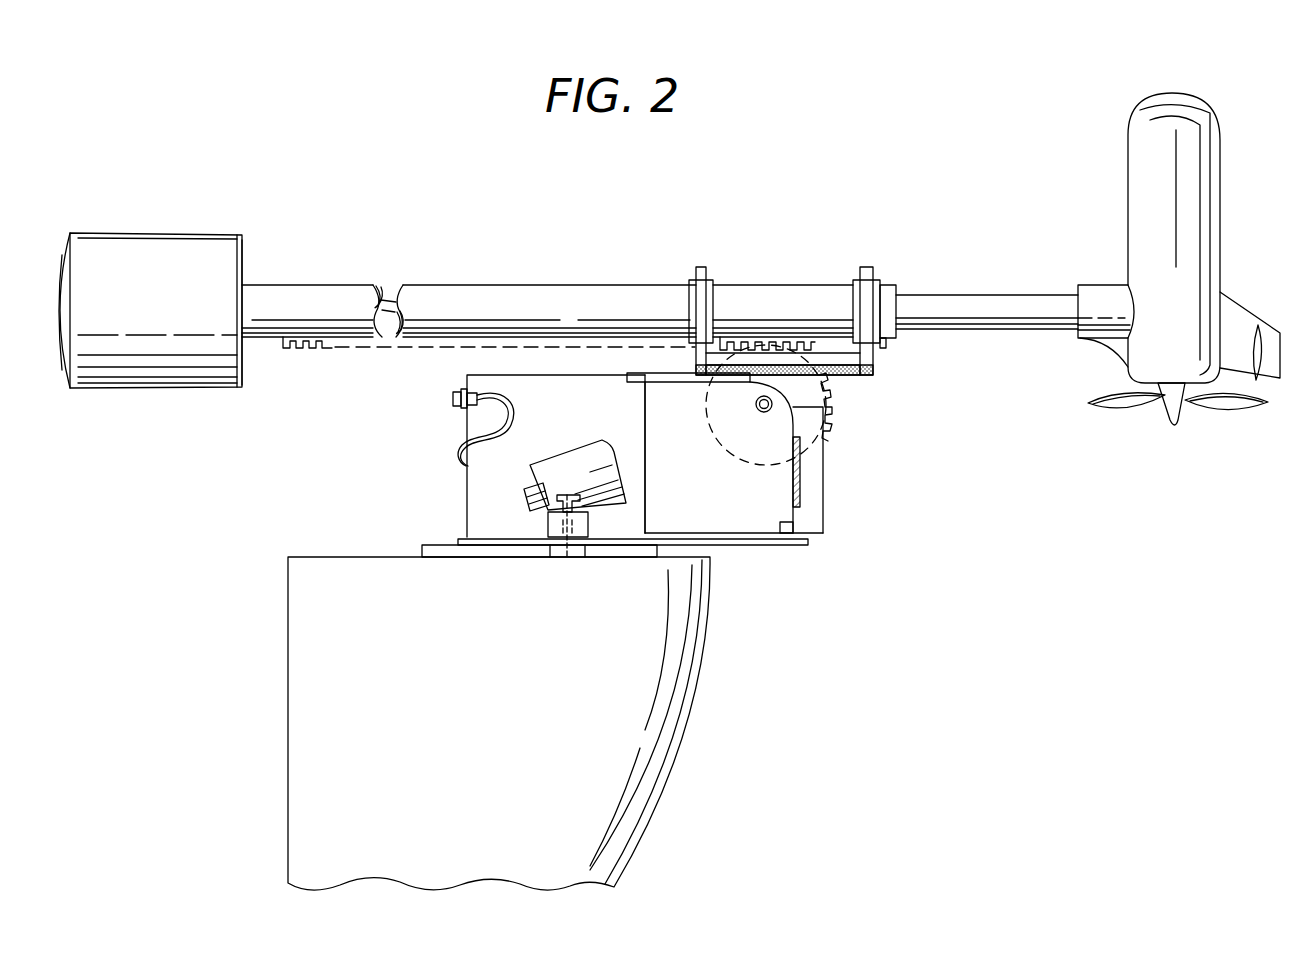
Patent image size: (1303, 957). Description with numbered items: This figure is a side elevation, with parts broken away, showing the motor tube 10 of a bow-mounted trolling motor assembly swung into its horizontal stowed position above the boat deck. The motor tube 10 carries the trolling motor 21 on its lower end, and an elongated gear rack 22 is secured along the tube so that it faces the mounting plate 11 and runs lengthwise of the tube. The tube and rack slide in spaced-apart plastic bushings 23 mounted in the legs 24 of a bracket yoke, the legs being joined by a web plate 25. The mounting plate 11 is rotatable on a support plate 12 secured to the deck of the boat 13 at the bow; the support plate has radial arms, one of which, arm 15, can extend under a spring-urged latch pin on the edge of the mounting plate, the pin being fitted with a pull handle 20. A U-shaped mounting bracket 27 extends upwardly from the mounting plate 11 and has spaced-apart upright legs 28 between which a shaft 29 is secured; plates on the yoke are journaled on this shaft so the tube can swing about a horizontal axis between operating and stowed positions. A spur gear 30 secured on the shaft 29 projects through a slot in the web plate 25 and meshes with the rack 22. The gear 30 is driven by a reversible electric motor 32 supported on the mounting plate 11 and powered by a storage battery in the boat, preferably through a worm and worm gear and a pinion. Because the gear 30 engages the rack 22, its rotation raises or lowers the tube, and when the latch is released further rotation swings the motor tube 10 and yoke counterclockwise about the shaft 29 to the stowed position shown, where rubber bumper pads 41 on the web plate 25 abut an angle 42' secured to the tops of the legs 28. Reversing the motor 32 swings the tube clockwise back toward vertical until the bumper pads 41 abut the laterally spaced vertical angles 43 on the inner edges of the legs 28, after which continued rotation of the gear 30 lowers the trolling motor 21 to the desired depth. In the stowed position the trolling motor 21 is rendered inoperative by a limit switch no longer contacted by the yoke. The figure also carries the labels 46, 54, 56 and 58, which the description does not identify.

The motor tube 10 is at (568, 285).
The mounting plate 11 is at (490, 537).
The support plate 12 is at (441, 546).
The boat 13 is at (706, 648).
The radial arm 15 is at (588, 552).
The pull handle 20 is at (564, 494).
The trolling motor 21 is at (1214, 172).
The gear rack 22 is at (337, 348).
The plastic bushings 23 is at (713, 285).
The legs 24 is at (702, 268).
The web plate 25 is at (873, 363).
The U-shaped mounting bracket 27 is at (646, 421).
The upright legs 28 is at (718, 492).
The shaft 29 is at (767, 412).
The spur gear 30 is at (826, 425).
The reversible electric motor 32 is at (581, 448).
The rubber bumper pads 41 is at (843, 375).
The angle 42' is at (683, 363).
The vertical angles 43 is at (820, 510).
The motor end plate 46 is at (243, 375).
The steering motor 54 is at (198, 296).
The electrical connector 56 is at (452, 398).
The control housing 58 is at (476, 478).